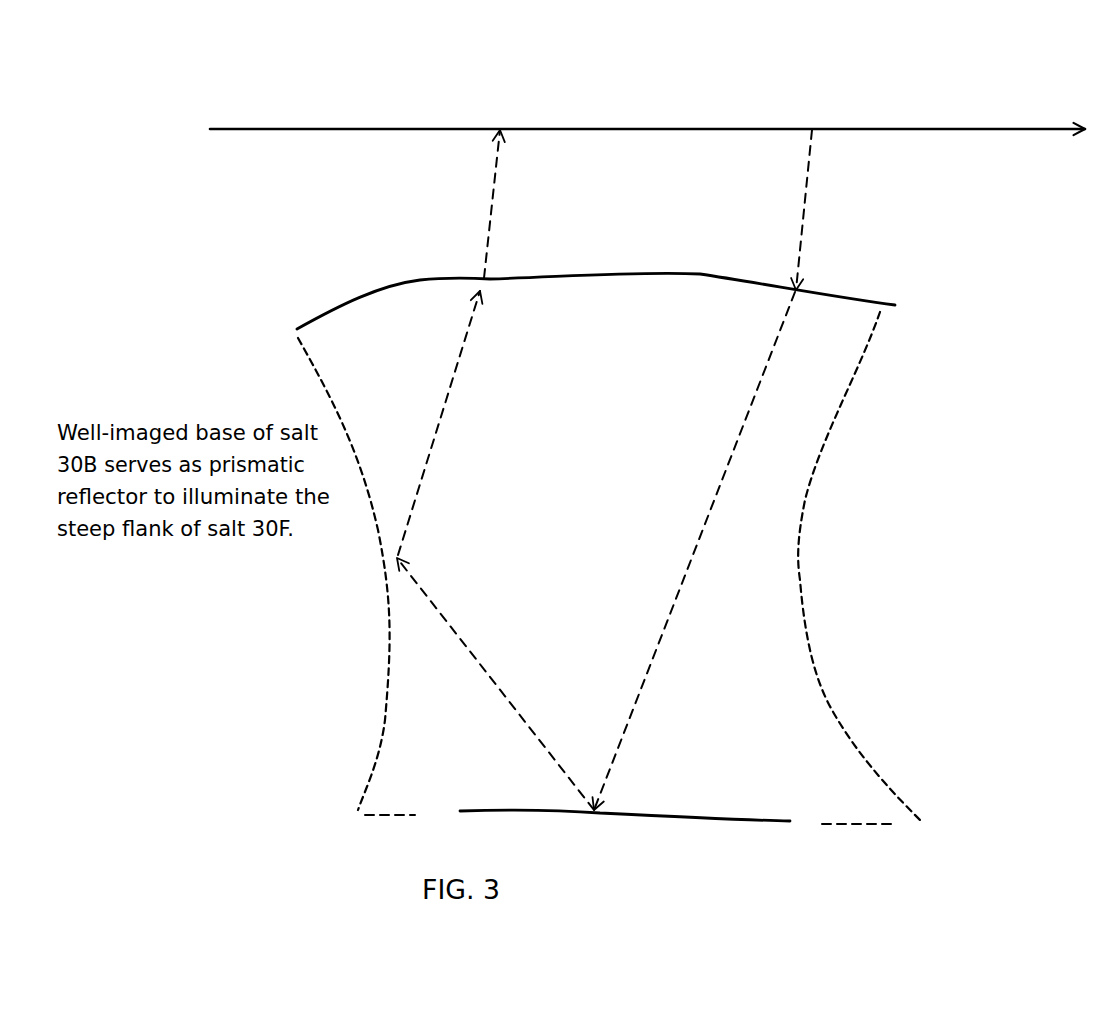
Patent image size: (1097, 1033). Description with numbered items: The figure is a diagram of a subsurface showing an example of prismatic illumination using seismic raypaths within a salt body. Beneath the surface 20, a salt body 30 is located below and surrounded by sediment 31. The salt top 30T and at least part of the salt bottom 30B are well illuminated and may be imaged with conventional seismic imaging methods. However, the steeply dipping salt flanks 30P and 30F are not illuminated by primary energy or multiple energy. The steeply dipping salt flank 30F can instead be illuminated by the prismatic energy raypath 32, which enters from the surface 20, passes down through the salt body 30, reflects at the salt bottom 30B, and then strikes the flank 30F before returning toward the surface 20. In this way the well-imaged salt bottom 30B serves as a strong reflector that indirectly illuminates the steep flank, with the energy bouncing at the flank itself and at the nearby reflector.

The surface 20 is at (275, 130).
The sediment 31 is at (300, 220).
The prismatic energy raypath 32 is at (806, 168).
The salt body 30 is at (583, 522).
The salt top 30T is at (833, 296).
The steeply dipping salt flank 30F is at (365, 567).
The steeply dipping salt flank 30P is at (818, 516).
The salt bottom 30B is at (645, 825).